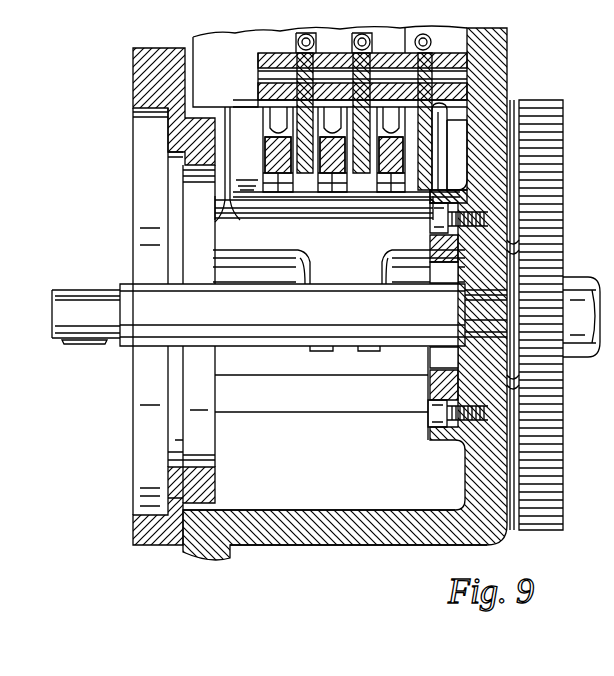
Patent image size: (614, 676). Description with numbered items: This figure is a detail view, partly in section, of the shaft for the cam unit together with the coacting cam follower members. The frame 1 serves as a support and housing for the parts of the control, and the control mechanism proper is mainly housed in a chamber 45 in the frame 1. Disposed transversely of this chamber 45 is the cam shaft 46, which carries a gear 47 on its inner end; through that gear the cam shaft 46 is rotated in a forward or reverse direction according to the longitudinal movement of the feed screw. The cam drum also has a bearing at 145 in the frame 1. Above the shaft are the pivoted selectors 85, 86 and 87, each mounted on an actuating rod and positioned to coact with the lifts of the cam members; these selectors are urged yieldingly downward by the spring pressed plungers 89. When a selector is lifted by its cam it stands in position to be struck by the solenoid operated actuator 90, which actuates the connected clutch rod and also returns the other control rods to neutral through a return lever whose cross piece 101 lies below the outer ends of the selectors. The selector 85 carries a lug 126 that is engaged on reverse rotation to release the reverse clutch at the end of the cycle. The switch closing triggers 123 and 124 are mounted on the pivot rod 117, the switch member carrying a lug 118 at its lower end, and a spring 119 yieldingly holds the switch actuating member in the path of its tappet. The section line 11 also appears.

The frame 1 is at (213, 559).
The section line 11 is at (445, 22).
The chamber 45 is at (305, 503).
The cam shaft 46 is at (250, 335).
The gear 47 is at (548, 238).
The selector 85 is at (420, 180).
The selector 86 is at (305, 176).
The selector 87 is at (360, 176).
The spring pressed plunger 89 is at (337, 121).
The solenoid operated actuator 90 is at (243, 252).
The cross piece 101 is at (247, 198).
The pivot rod 117 is at (470, 72).
The lug 118 is at (430, 118).
The spring 119 is at (297, 42).
The switch closing trigger 123 is at (333, 198).
The switch closing trigger 124 is at (362, 222).
The lug 126 is at (420, 190).
The bearing 145 is at (205, 455).